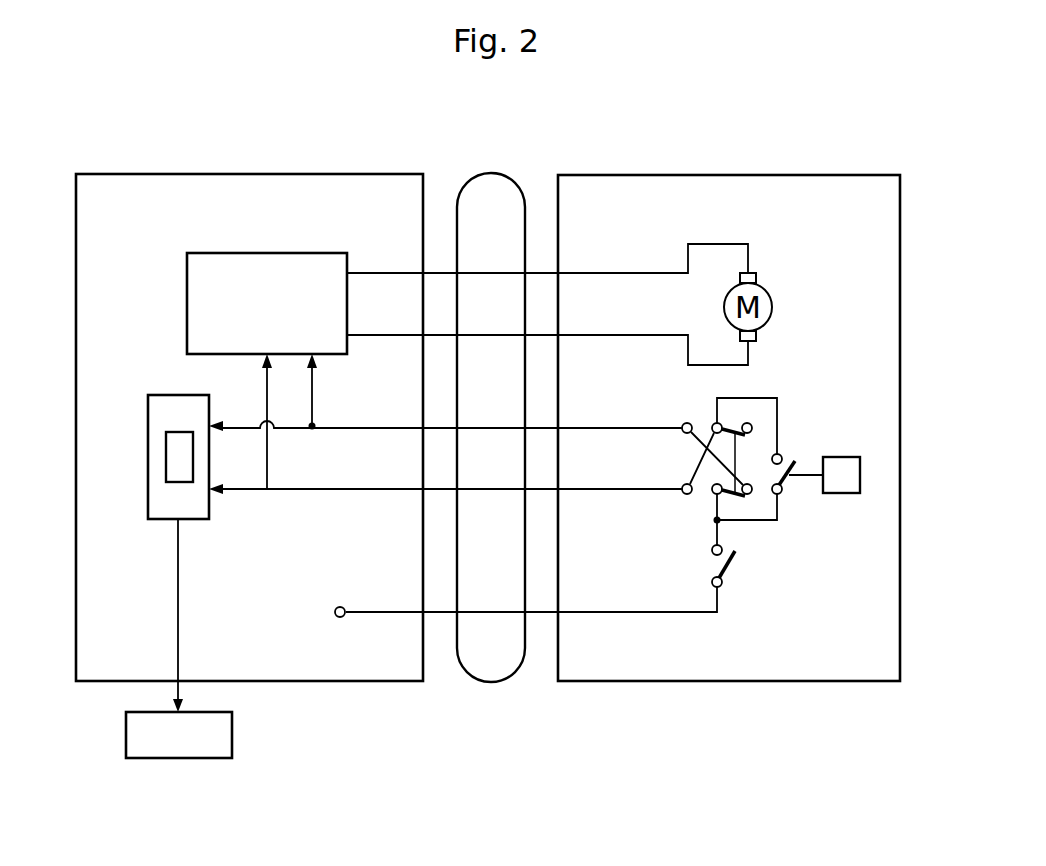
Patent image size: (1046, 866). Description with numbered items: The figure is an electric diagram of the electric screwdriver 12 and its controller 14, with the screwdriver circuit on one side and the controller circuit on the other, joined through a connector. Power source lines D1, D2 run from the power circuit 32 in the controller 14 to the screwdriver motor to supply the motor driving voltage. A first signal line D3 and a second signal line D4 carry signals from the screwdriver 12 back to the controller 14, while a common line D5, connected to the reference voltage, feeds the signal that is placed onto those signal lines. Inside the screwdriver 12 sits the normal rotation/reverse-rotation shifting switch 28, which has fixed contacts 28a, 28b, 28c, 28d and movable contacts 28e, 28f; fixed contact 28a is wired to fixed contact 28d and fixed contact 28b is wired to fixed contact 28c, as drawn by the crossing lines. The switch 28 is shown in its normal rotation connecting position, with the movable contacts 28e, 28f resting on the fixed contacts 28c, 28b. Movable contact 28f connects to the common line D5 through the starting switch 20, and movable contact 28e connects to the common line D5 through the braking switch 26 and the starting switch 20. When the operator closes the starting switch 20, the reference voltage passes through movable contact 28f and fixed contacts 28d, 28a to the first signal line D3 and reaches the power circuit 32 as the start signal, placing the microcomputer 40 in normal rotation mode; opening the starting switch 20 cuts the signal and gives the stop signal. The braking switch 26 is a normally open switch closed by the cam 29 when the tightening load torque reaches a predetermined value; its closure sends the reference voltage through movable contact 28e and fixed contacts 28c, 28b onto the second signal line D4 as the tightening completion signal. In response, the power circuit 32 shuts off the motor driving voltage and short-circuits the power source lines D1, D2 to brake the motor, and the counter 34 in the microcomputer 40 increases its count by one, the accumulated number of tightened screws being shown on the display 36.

The electric screwdriver 12 is at (802, 175).
The controller 14 is at (330, 173).
The starting switch 20 is at (737, 568).
The braking switch 26 is at (800, 466).
The normal rotation/reverse-rotation shifting switch 28 is at (741, 444).
The fixed contact 28a is at (683, 423).
The fixed contact 28b is at (683, 496).
The fixed contact 28c is at (751, 424).
The fixed contact 28d is at (751, 493).
The movable contact 28e is at (720, 423).
The movable contact 28f is at (712, 497).
The cam 29 is at (838, 493).
The power circuit 32 is at (242, 252).
The counter 34 is at (166, 474).
The display 36 is at (232, 738).
The microcomputer 40 is at (158, 393).
The power source line D1 is at (668, 273).
The power source line D2 is at (668, 335).
The first signal line D3 is at (638, 428).
The second signal line D4 is at (638, 489).
The common line D5 is at (638, 612).